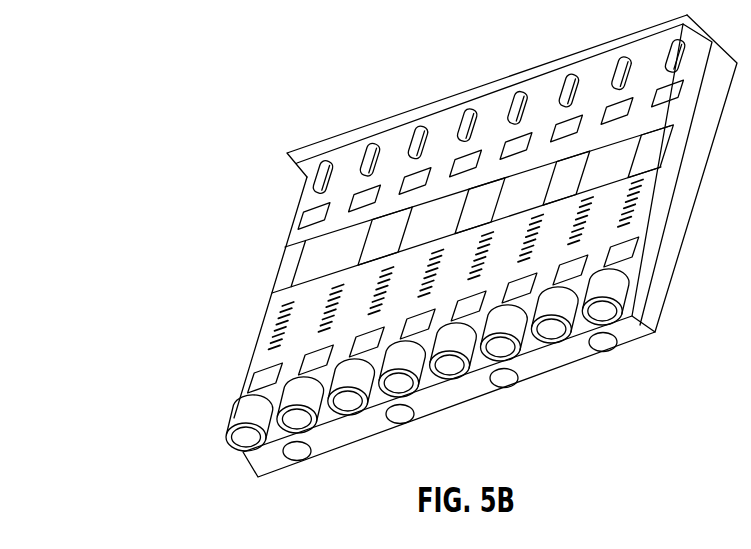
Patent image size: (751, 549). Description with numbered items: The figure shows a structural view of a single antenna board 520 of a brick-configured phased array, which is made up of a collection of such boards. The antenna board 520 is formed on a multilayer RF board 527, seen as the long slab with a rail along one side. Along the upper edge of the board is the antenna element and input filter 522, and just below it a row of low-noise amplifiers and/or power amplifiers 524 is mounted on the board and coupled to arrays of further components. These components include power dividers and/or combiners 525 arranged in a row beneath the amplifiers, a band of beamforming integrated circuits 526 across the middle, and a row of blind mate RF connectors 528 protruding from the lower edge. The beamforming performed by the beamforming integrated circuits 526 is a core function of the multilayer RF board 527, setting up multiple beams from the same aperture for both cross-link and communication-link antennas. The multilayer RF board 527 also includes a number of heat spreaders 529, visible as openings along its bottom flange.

The antenna board 520 is at (447, 246).
The antenna element and input filter 522 is at (471, 85).
The low-noise amplifiers and/or power amplifiers 524 is at (317, 182).
The power dividers and/or combiners 525 is at (310, 220).
The beamforming integrated circuits 526 is at (310, 272).
The multilayer RF board 527 is at (661, 243).
The blind mate RF connectors 528 is at (240, 420).
The heat spreaders 529 is at (506, 380).